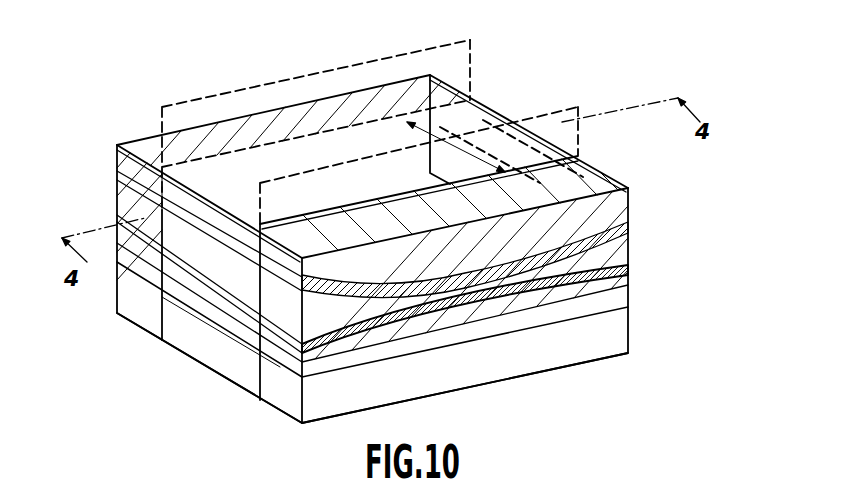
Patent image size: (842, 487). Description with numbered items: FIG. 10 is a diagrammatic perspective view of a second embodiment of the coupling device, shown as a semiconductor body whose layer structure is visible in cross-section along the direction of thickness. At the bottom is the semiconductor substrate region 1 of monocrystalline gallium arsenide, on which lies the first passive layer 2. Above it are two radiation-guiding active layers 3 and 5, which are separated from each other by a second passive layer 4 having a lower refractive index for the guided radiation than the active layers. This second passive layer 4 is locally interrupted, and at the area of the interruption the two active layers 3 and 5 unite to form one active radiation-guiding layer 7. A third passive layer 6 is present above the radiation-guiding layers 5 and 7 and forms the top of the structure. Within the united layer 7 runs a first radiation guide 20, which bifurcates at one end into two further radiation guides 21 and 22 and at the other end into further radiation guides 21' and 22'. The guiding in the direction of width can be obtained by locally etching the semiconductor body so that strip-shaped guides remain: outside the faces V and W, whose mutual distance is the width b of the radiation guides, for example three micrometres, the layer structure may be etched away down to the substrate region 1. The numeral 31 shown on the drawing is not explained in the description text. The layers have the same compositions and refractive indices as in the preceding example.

The semiconductor substrate region 1 is at (613, 328).
The first passive layer 2 is at (603, 297).
The radiation guiding active layer 3 is at (607, 278).
The second passive layer 4 is at (605, 248).
The radiation guiding active layer 5 is at (603, 217).
The third passive layer 6 is at (605, 196).
The active radiation guiding layer 7 is at (467, 288).
The first radiation guide 20 is at (385, 175).
The further radiation guide 21 is at (419, 156).
The further radiation guide 22 is at (511, 118).
The further radiation guide 21' is at (214, 346).
The further radiation guide 22' is at (118, 193).
The etched band 31 is at (160, 178).
The face W is at (474, 52).
The face V is at (580, 143).
The width of the radiation guides b is at (446, 140).